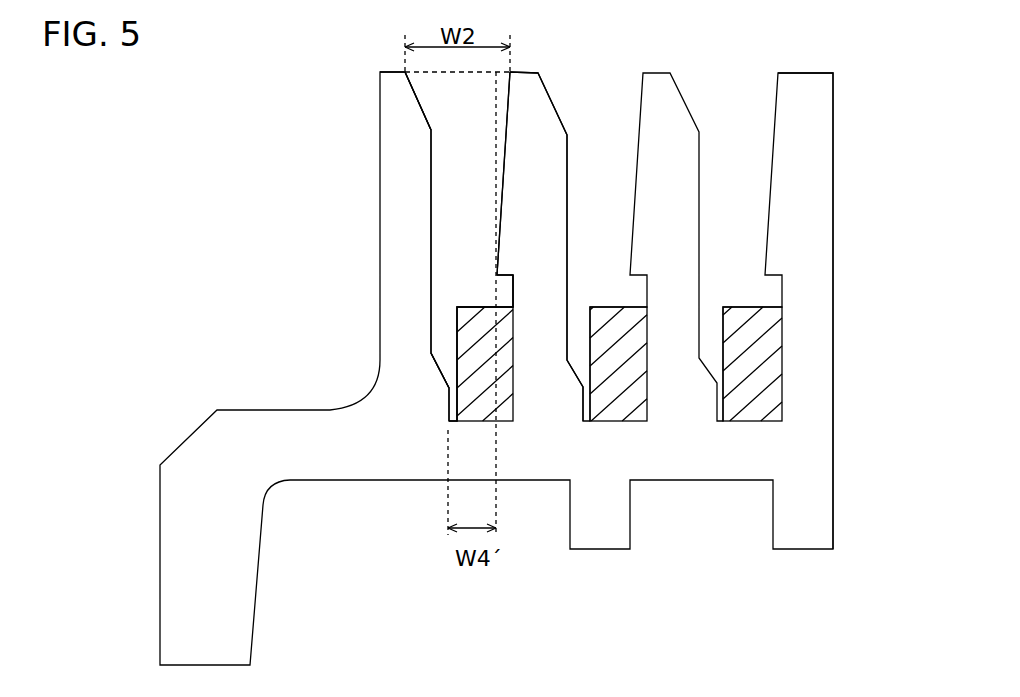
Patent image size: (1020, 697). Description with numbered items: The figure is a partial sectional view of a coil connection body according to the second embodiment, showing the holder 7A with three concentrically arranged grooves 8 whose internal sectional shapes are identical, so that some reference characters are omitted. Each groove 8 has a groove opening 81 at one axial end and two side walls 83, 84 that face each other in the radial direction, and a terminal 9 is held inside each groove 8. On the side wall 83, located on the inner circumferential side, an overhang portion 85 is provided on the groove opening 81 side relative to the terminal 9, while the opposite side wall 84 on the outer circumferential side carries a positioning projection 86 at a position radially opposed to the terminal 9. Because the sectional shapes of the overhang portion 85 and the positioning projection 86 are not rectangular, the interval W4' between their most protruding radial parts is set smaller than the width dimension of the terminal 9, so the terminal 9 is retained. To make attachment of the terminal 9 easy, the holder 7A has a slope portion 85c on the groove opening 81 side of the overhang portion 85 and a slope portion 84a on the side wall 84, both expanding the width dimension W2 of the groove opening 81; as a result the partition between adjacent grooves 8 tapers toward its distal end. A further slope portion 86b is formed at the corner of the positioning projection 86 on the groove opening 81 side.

The holder 7A is at (160, 547).
The groove 8 is at (735, 195).
The terminal 9 is at (753, 332).
The groove opening 81 is at (472, 73).
The side wall 83 is at (515, 287).
The side wall 84 is at (433, 209).
The slope portion 84a is at (420, 98).
The overhang portion 85 is at (508, 215).
The slope portion 85c is at (500, 137).
The positioning projection 86 is at (445, 405).
The slope portion 86b is at (436, 365).